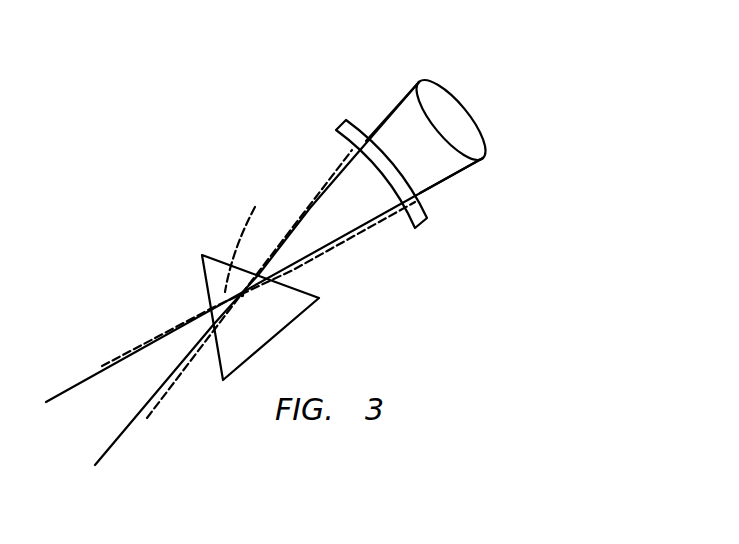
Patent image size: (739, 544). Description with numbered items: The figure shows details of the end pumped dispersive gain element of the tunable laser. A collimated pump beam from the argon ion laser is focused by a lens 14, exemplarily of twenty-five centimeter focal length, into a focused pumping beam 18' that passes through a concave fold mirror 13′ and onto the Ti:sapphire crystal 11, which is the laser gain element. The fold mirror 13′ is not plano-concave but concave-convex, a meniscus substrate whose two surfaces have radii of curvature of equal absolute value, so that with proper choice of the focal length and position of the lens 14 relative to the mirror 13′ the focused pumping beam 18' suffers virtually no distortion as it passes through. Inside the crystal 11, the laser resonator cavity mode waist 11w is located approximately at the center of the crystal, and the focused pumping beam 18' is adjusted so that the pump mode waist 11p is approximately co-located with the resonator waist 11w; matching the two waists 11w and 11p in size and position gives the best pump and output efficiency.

The Ti:sapphire crystal 11 is at (222, 257).
The laser resonator cavity mode waist 11w is at (256, 237).
The focused pump mode waist 11p is at (242, 295).
The concave fold mirror 13′ is at (346, 119).
The lens 14 is at (442, 90).
The focused pumping beam 18' is at (459, 218).